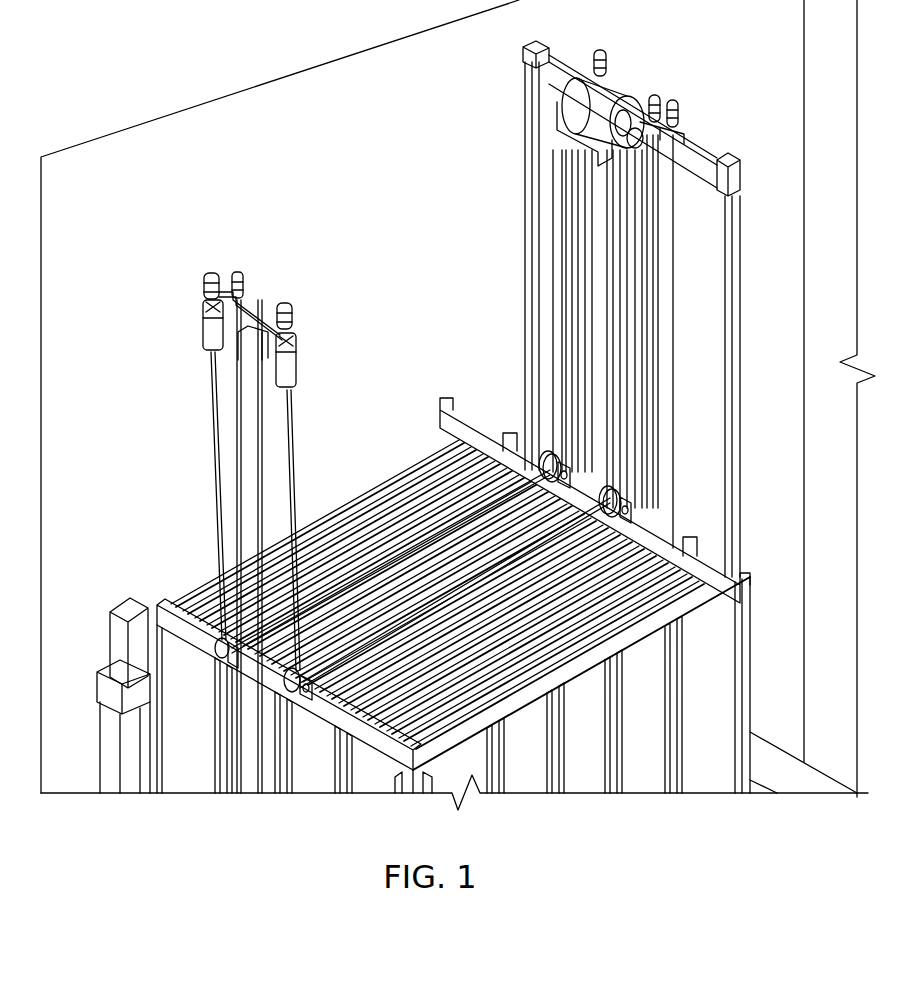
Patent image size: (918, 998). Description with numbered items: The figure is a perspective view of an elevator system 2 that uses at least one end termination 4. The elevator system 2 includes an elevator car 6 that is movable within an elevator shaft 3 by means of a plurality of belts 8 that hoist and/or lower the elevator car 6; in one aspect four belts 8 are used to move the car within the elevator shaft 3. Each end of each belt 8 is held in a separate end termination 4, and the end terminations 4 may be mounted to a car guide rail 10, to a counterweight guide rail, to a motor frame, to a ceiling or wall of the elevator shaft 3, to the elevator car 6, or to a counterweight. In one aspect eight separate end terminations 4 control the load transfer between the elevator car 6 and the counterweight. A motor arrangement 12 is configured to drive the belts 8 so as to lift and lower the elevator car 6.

The elevator system 2 is at (352, 200).
The elevator shaft 3 is at (102, 181).
The end termination 4 is at (182, 316).
The elevator car 6 is at (185, 621).
The belt 8 is at (217, 408).
The car guide rail 10 is at (262, 442).
The motor arrangement 12 is at (588, 110).